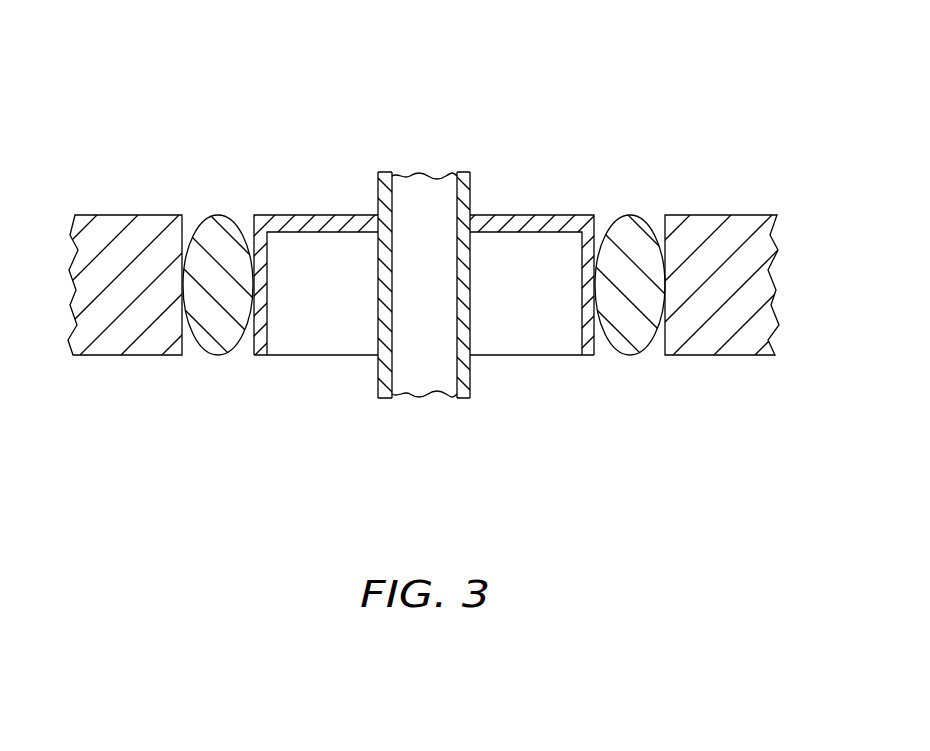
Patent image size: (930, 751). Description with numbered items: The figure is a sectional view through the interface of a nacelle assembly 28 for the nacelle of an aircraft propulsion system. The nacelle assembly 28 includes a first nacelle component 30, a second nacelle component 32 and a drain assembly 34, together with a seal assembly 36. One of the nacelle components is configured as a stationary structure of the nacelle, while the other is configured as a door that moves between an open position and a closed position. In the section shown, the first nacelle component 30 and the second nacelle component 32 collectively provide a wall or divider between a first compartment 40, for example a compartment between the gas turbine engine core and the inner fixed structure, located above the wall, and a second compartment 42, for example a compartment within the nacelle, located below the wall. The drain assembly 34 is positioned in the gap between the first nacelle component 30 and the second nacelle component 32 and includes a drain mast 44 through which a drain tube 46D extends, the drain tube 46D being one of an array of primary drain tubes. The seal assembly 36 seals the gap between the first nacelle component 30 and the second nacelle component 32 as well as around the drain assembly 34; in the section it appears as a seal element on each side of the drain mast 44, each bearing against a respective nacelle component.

The nacelle assembly 28 is at (729, 91).
The first nacelle component 30 is at (86, 211).
The second nacelle component 32 is at (757, 212).
The drain assembly 34 is at (500, 191).
The seal assembly 36 is at (217, 194).
The first compartment 40 is at (295, 110).
The second compartment 42 is at (282, 472).
The drain mast 44 is at (558, 213).
The drain tube 46D is at (441, 182).